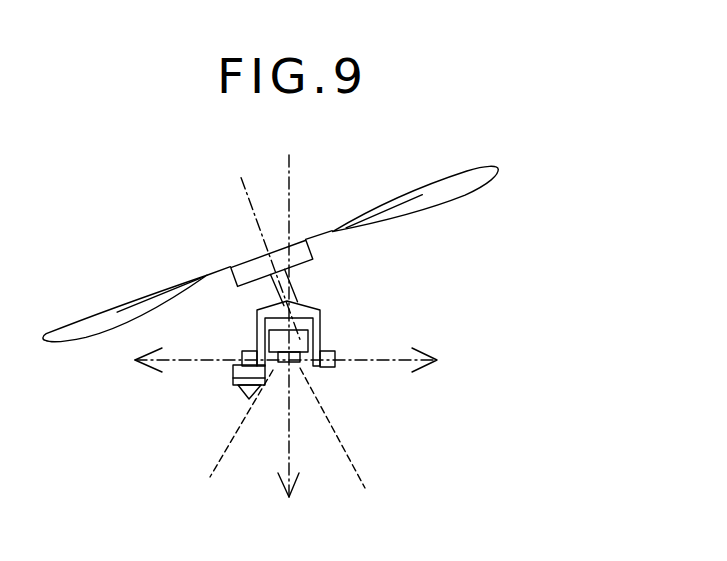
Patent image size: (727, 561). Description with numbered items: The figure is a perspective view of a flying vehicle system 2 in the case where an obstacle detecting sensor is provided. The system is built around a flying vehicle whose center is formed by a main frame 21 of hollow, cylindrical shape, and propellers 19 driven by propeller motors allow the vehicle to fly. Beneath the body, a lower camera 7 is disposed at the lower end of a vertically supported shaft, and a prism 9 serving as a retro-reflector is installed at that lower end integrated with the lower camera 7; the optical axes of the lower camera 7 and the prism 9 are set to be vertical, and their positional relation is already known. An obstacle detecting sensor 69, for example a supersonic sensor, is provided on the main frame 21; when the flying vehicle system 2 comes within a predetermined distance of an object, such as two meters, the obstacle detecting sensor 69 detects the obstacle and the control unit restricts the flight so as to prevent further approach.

The flying vehicle system 2 is at (319, 233).
The propellers 19 is at (471, 191).
The main frame 21 is at (257, 329).
The lower camera 7 is at (282, 365).
The obstacle detecting sensor 69 is at (330, 351).
The prism 9 is at (237, 393).